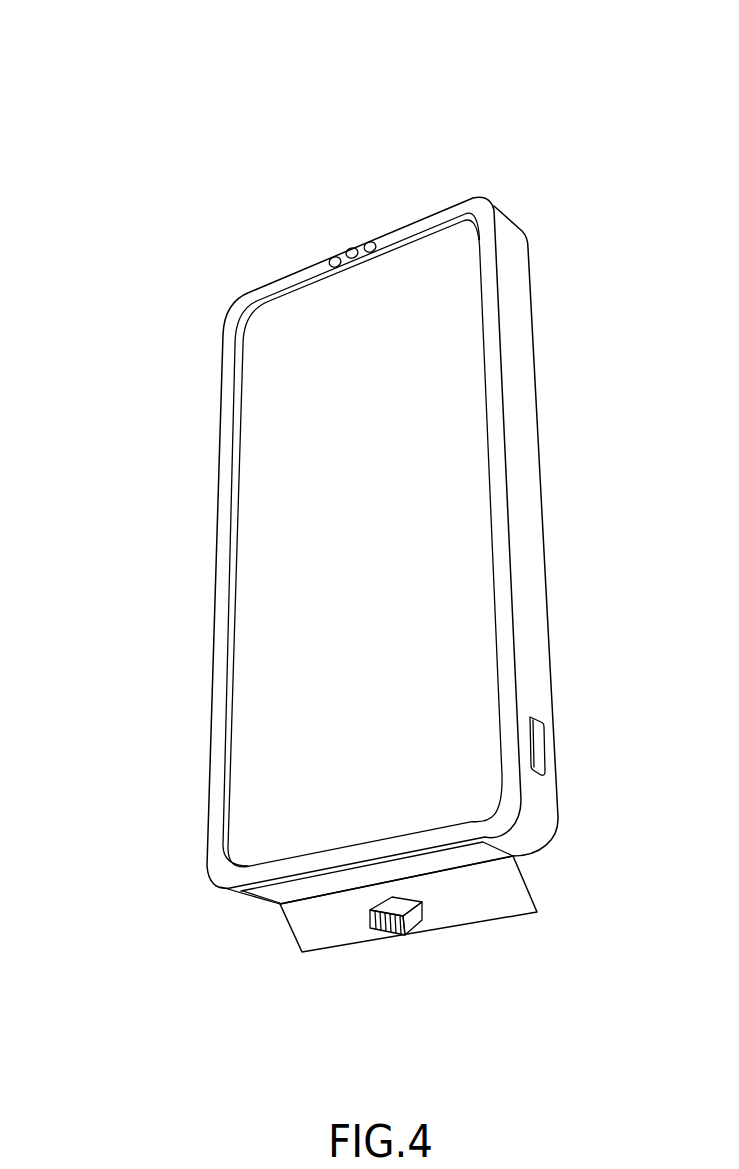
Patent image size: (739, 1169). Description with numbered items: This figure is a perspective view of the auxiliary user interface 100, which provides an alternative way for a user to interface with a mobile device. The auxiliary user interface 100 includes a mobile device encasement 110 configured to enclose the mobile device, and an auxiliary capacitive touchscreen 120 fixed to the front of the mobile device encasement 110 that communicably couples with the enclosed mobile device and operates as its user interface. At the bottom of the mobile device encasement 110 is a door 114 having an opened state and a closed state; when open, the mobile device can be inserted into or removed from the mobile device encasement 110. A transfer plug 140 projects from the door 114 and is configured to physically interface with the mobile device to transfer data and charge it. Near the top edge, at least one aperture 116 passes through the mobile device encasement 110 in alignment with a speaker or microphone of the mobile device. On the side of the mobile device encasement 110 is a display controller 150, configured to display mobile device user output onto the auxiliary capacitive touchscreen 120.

The auxiliary user interface 100 is at (476, 85).
The mobile device encasement 110 is at (523, 315).
The door 114 is at (515, 898).
The aperture 116 is at (349, 250).
The auxiliary capacitive touchscreen 120 is at (248, 530).
The transfer plug 140 is at (372, 927).
The display controller 150 is at (542, 739).